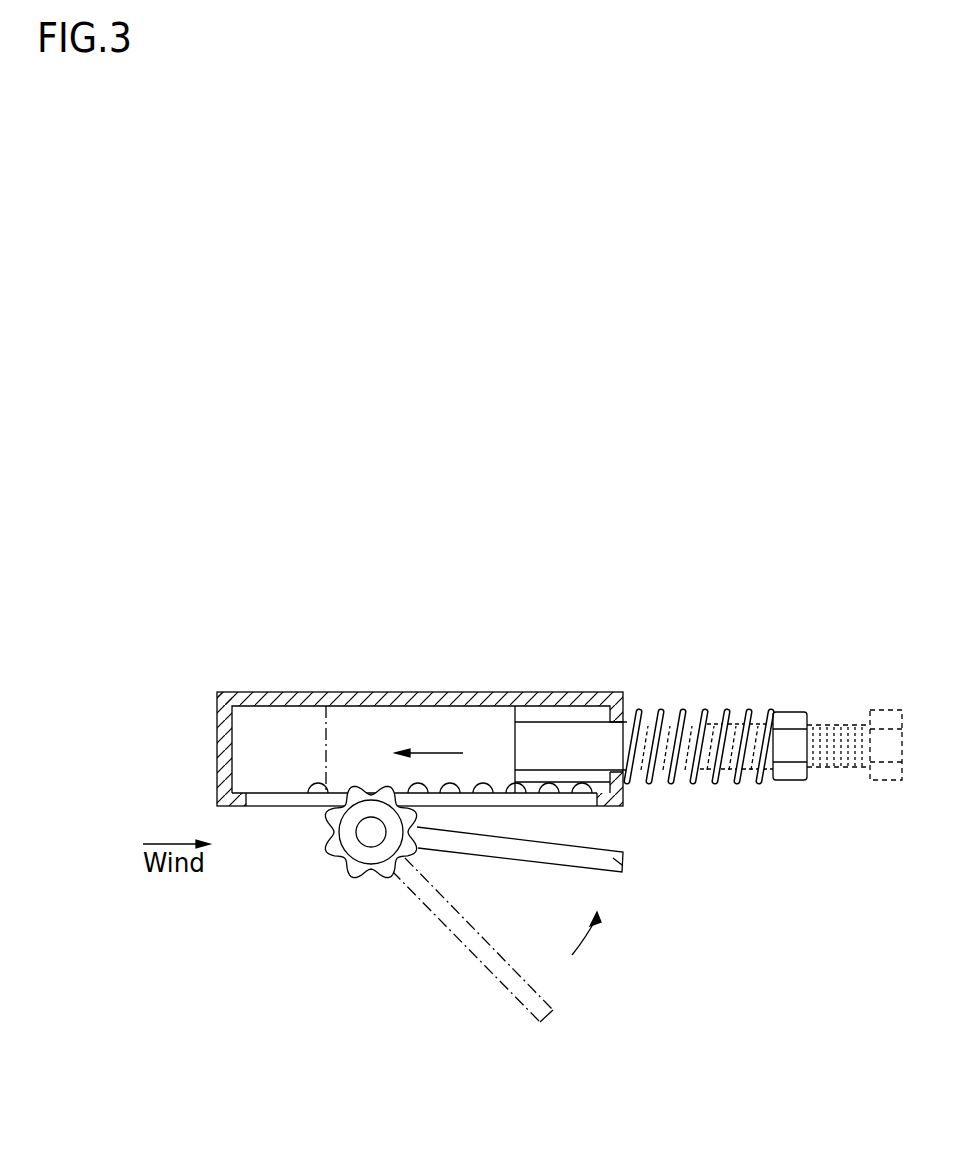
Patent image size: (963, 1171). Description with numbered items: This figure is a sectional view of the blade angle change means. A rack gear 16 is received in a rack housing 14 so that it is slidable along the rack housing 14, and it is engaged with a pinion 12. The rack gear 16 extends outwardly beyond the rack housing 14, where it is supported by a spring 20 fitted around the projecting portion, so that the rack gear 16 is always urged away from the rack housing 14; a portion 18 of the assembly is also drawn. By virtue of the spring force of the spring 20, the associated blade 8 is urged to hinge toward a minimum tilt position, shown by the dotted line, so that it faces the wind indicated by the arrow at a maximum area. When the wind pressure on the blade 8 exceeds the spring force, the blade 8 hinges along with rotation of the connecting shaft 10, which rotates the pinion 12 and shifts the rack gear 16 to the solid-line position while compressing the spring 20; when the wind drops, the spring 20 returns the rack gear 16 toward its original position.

The blade 8 is at (622, 870).
The connecting shaft 10 is at (360, 835).
The pinion 12 is at (353, 875).
The rack housing 14 is at (420, 749).
The rack gear 16 is at (430, 730).
The piston rod 18 is at (572, 738).
The spring 20 is at (762, 781).